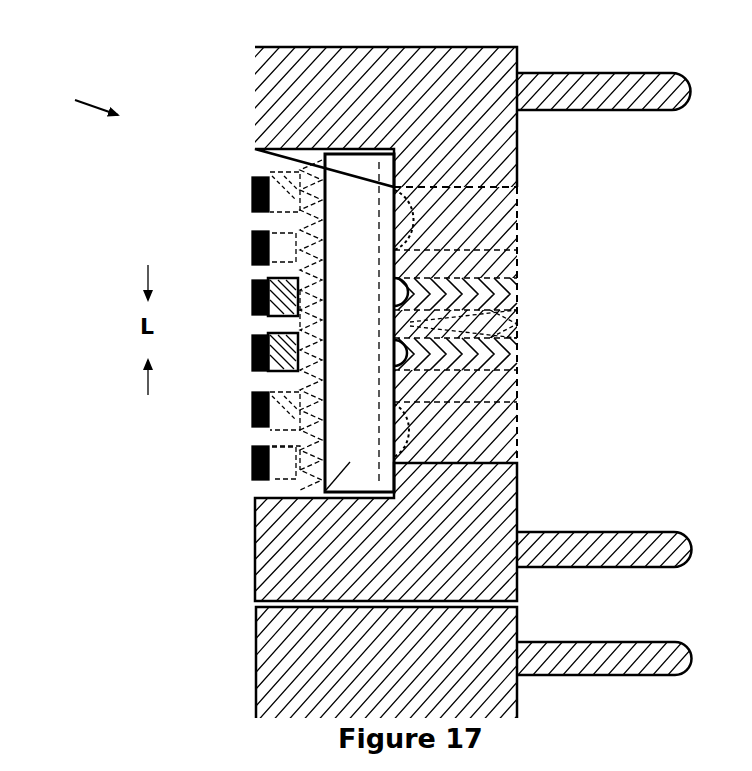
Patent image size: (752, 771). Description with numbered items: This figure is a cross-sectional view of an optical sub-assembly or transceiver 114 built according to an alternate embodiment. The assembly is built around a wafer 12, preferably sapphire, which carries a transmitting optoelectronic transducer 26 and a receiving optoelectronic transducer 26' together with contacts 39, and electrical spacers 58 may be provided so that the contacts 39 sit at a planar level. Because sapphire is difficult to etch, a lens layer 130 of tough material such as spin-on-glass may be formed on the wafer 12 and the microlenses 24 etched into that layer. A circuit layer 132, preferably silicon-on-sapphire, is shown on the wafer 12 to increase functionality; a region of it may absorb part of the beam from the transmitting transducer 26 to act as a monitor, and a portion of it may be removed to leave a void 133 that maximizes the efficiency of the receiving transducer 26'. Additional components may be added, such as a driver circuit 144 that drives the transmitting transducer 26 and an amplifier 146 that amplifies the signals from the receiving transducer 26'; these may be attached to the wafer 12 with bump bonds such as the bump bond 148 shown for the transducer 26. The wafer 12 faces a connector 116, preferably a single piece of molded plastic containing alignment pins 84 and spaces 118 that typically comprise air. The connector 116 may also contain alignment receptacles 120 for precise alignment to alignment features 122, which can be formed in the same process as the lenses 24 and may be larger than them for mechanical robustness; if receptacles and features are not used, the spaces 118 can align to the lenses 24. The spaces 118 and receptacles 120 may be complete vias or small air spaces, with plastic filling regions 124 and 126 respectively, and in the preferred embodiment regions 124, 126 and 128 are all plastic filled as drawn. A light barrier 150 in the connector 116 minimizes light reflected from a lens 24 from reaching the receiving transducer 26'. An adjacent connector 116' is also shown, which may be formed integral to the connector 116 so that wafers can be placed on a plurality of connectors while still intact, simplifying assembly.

The optical sub-assembly or transceiver 114 is at (73, 97).
The connector 116 is at (349, 385).
The adjacent connector 116' is at (430, 385).
The alignment pins 84 is at (604, 94).
The wafer 12 is at (298, 530).
The lens layer 130 is at (387, 163).
The circuit layer 132 is at (302, 166).
The contacts 39 is at (252, 185).
The driver circuit 144 is at (302, 165).
The electrical spacer 58 is at (282, 224).
The bump bond 148 is at (270, 280).
The transmitting optoelectronic transducer 26 is at (255, 314).
The receiving optoelectronic transducer 26' is at (254, 363).
The void 133 is at (300, 376).
The amplifier 146 is at (284, 436).
The spaces 118 is at (406, 285).
The alignment receptacles 120 is at (420, 205).
The alignment features 122 is at (415, 212).
The region 124 is at (470, 235).
The region 126 is at (500, 287).
The region 128 is at (505, 328).
The light barrier 150 is at (500, 322).
The lenses 24 is at (500, 300).